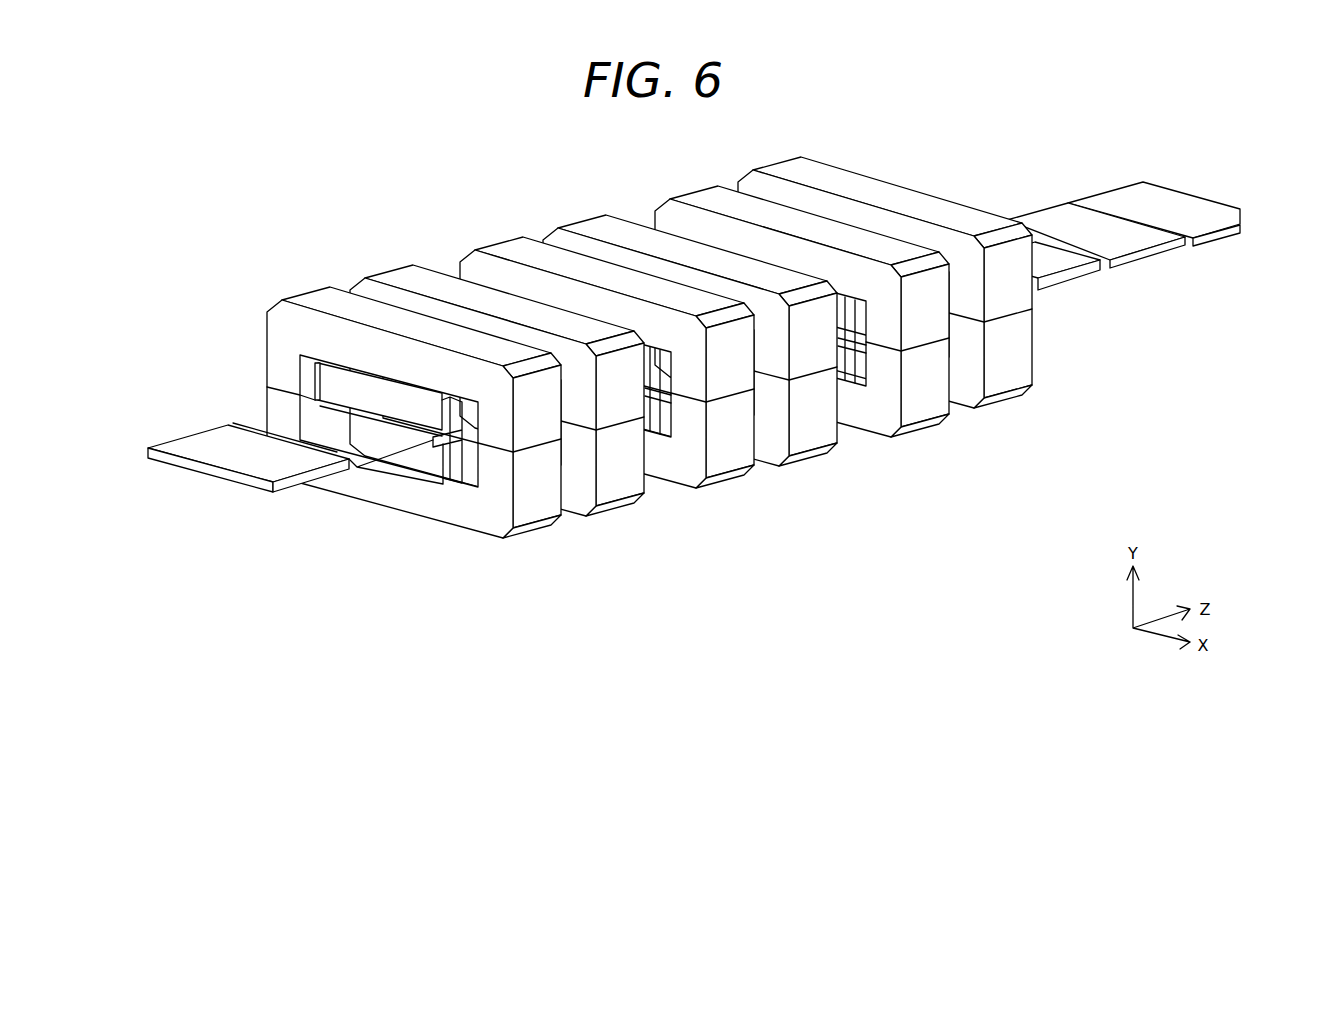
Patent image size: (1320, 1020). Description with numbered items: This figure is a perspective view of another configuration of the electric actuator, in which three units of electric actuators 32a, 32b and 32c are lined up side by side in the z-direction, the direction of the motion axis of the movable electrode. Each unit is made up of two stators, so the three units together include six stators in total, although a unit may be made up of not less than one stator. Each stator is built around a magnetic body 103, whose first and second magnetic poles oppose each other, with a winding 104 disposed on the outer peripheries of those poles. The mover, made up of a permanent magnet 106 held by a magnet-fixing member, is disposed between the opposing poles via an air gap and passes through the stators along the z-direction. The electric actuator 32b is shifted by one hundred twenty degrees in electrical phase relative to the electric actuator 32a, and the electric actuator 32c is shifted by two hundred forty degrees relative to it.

The magnetic body 103 is at (279, 343).
The winding 104 is at (327, 380).
The permanent magnet 106 is at (208, 443).
The electric actuator 32a is at (425, 435).
The electric actuator 32b is at (858, 470).
The electric actuator 32c is at (1047, 416).